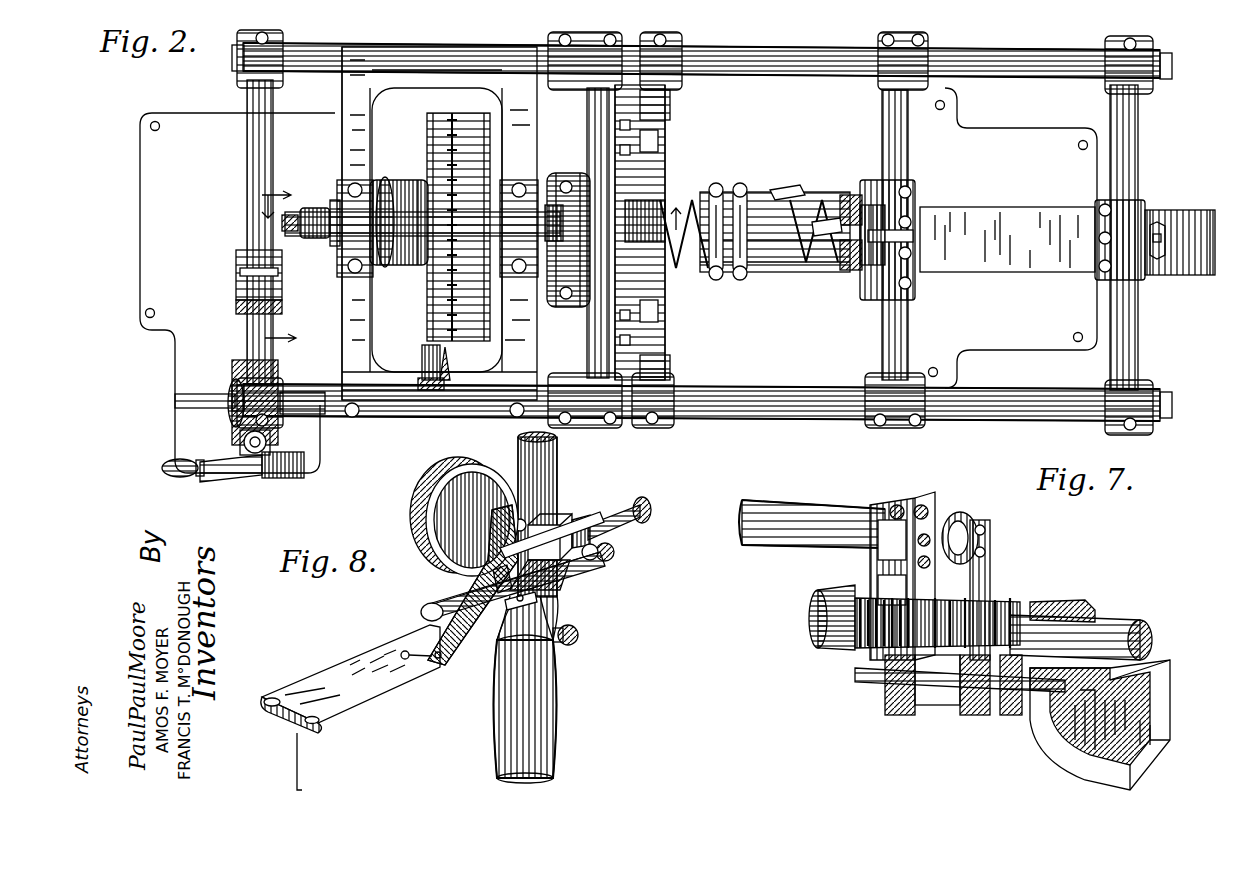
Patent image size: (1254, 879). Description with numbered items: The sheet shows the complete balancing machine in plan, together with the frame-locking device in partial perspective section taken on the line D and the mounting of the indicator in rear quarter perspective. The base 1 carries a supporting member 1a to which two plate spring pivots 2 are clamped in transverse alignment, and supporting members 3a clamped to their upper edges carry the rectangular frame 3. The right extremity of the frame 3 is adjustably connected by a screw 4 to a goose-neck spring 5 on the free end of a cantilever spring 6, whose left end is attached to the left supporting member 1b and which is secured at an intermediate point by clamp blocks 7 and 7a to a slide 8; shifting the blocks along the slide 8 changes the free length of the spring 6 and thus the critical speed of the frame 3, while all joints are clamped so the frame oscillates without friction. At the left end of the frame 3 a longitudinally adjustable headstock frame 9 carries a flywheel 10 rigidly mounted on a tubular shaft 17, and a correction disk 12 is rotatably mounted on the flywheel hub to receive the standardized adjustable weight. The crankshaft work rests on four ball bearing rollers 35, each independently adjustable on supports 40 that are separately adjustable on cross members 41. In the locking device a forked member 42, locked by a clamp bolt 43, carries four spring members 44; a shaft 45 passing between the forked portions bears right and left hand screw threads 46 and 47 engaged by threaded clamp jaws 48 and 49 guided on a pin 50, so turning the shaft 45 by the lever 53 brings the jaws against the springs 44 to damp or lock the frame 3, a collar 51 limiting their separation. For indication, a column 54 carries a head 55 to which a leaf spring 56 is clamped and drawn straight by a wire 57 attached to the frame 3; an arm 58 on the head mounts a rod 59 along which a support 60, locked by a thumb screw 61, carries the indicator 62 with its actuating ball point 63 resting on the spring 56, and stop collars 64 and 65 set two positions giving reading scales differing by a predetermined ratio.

In FIG. 2, the base 1 is at (820, 349).
In FIG. 2, the supporting member 1a is at (660, 322).
In FIG. 2, the left supporting member 1b is at (870, 296).
In FIG. 2, the plate spring pivot 2 is at (668, 102).
In FIG. 2, the rectangular frame 3 is at (262, 108).
In FIG. 7, the rectangular frame 3 is at (792, 512).
In FIG. 2, the supporting member 3a is at (672, 48).
In FIG. 2, the screw 4 is at (1160, 226).
In FIG. 2, the goose-neck spring 5 is at (1213, 243).
In FIG. 2, the cantilever spring 6 is at (1007, 239).
In FIG. 2, the clamp block 7 is at (724, 188).
In FIG. 2, the clamp block 7a is at (716, 183).
In FIG. 2, the slide 8 is at (782, 282).
In FIG. 2, the headstock frame 9 is at (437, 232).
In FIG. 2, the flywheel 10 is at (424, 222).
In FIG. 2, the correction disk 12 is at (432, 160).
In FIG. 2, the tubular shaft 17 is at (332, 212).
In FIG. 2, the ball bearing roller 35 is at (662, 208).
In FIG. 2, the support 40 is at (590, 172).
In FIG. 2, the cross member 41 is at (592, 322).
In FIG. 7, the forked member 42 is at (965, 518).
In FIG. 7, the clamp bolt 43 is at (920, 504).
In FIG. 7, the spring member 44 is at (992, 565).
In FIG. 7, the shaft 45 is at (1081, 637).
In FIG. 7, the screw thread 46 is at (1020, 608).
In FIG. 7, the screw thread 47 is at (860, 655).
In FIG. 7, the threaded clamp jaw 48 is at (892, 708).
In FIG. 7, the threaded clamp jaw 49 is at (1005, 715).
In FIG. 7, the pin 50 is at (878, 680).
In FIG. 7, the collar 51 is at (828, 620).
In FIG. 2, the lever 53 is at (186, 478).
In FIG. 8, the column 54 is at (545, 718).
In FIG. 8, the head 55 is at (515, 662).
In FIG. 8, the leaf spring 56 is at (351, 674).
In FIG. 8, the wire 57 is at (297, 763).
In FIG. 8, the arm 58 is at (651, 510).
In FIG. 8, the rod 59 is at (424, 602).
In FIG. 8, the support 60 is at (563, 525).
In FIG. 8, the thumb screw 61 is at (616, 553).
In FIG. 2, the indicator 62 is at (226, 405).
In FIG. 8, the indicator 62 is at (422, 495).
In FIG. 8, the actuating ball point 63 is at (400, 653).
In FIG. 8, the stop collar 64 is at (590, 526).
In FIG. 8, the stop collar 65 is at (458, 580).
In FIG. 2, the section line DD D is at (246, 203).
In FIG. 2, the direction A is at (477, 228).